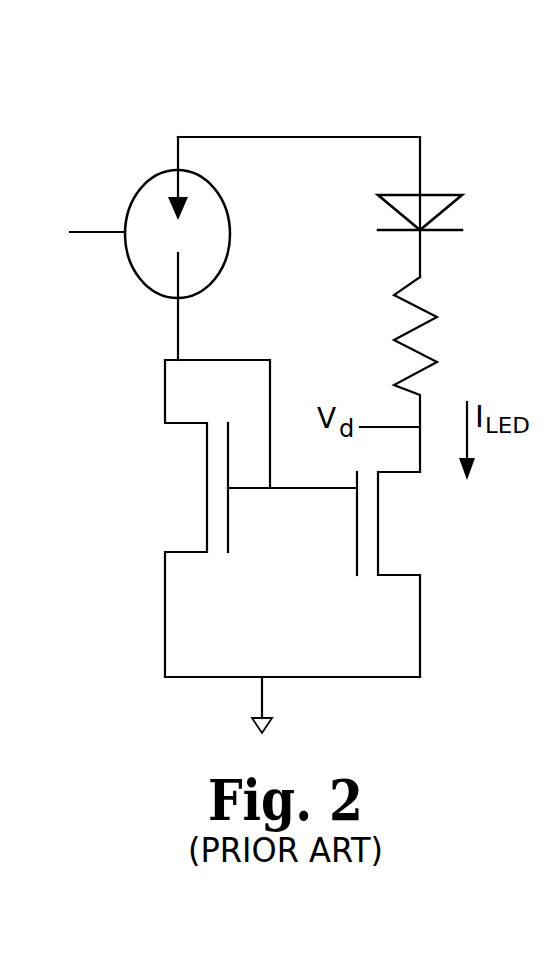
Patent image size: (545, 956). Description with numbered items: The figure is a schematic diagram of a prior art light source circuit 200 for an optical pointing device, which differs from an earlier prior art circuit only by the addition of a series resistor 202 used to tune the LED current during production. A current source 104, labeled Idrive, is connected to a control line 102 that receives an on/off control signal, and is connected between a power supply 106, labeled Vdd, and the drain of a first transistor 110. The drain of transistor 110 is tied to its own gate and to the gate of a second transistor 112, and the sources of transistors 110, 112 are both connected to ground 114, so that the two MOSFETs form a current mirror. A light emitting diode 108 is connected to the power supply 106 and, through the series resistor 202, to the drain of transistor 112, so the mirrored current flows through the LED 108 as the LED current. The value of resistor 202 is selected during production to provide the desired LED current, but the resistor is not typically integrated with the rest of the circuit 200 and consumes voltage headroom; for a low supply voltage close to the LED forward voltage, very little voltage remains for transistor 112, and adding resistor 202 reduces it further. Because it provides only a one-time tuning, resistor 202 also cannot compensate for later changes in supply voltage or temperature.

The light source circuit 200 is at (208, 83).
The control line 102 is at (82, 233).
The current source 104 is at (156, 170).
The power supply 106 is at (384, 137).
The light emitting diode 108 is at (433, 193).
The series resistor 202 is at (427, 306).
The transistor 110 is at (207, 480).
The transistor 112 is at (379, 528).
The ground 114 is at (383, 678).